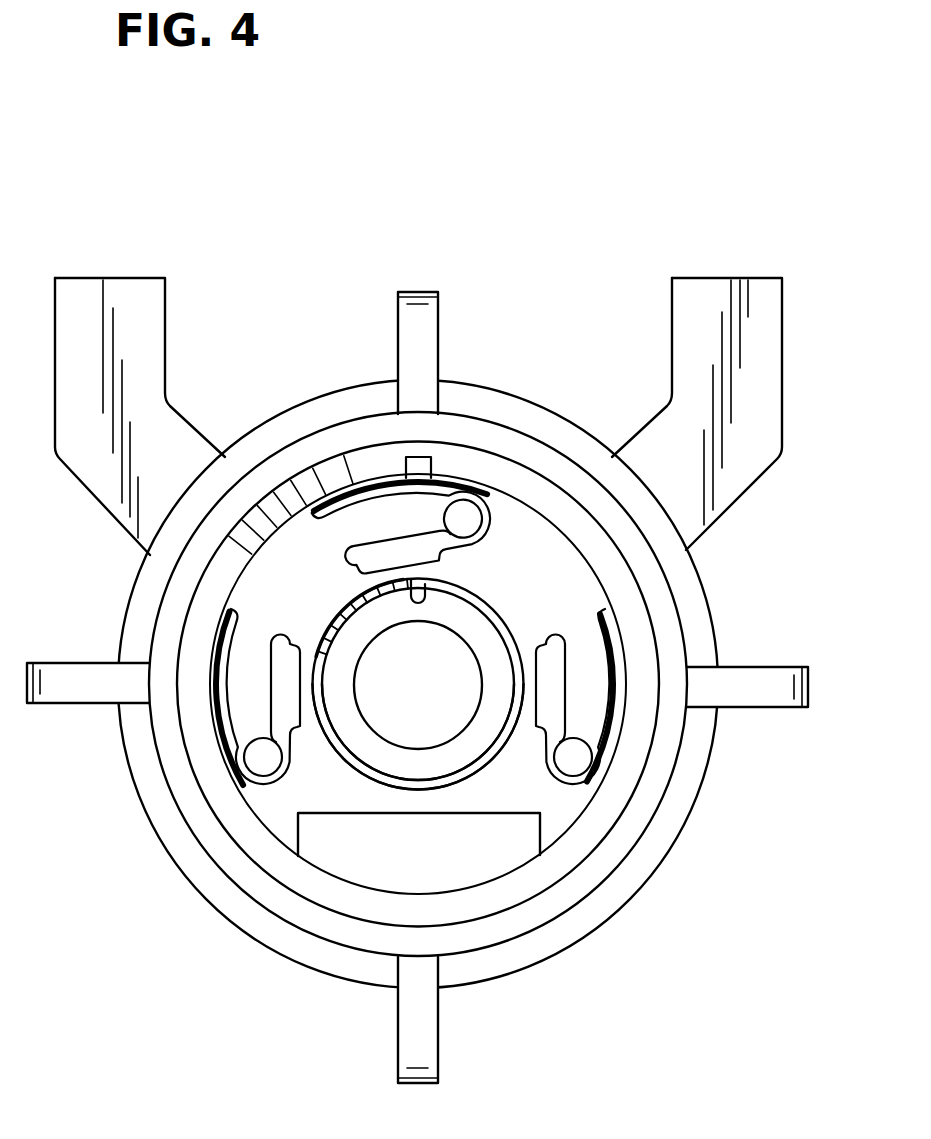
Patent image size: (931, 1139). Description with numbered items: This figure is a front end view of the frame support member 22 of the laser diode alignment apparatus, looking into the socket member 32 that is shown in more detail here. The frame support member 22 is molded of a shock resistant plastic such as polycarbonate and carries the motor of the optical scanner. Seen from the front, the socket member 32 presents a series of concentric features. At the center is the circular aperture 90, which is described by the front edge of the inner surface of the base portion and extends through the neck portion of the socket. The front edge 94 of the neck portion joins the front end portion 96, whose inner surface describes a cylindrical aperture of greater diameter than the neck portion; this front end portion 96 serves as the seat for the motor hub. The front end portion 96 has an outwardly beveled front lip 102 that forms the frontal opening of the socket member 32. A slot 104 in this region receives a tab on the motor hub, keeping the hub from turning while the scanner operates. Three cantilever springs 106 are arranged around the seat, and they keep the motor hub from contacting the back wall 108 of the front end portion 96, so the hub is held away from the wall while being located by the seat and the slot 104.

The frame support member 22 is at (570, 226).
The socket member 32 is at (495, 763).
The circular aperture 90 is at (475, 657).
The front edge of the neck portion 94 is at (445, 743).
The front end portion 96 is at (342, 760).
The front lip 102 is at (408, 788).
The slot 104 is at (432, 598).
The cantilever springs 106 is at (377, 513).
The back wall 108 is at (358, 630).